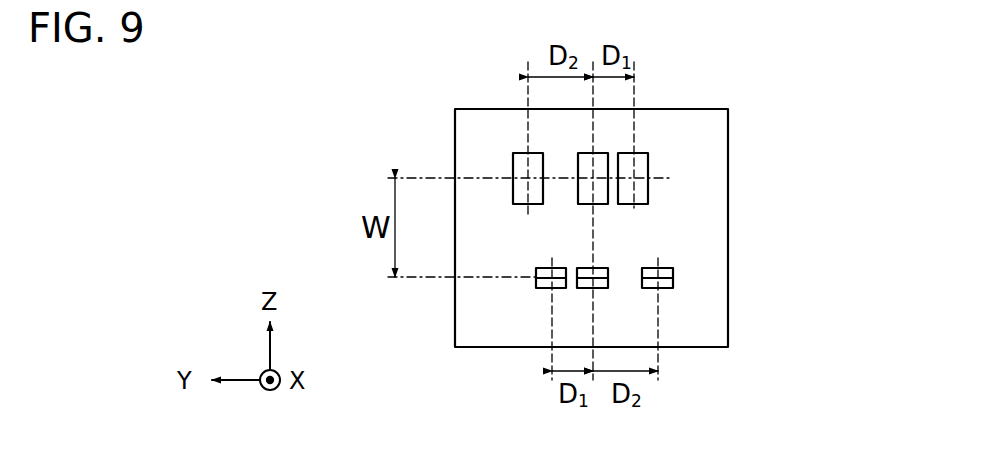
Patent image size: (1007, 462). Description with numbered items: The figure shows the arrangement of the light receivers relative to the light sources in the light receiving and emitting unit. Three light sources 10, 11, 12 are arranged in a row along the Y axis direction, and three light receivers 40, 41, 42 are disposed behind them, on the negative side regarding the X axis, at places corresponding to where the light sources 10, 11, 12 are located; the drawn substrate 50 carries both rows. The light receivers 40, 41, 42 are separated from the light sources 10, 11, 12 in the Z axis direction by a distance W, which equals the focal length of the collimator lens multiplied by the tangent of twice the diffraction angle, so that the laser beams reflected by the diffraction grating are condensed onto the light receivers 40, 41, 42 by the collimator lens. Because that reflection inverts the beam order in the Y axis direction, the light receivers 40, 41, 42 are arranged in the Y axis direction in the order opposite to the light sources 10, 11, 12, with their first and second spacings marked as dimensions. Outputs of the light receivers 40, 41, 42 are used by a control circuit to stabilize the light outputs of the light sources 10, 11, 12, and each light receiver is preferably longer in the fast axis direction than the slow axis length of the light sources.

The substrate 50 is at (473, 108).
The light receiver 41 is at (528, 153).
The light receiver 40 is at (593, 153).
The light receiver 42 is at (648, 192).
The light source 12 is at (552, 268).
The light source 11 is at (673, 282).
The light source 10 is at (600, 288).